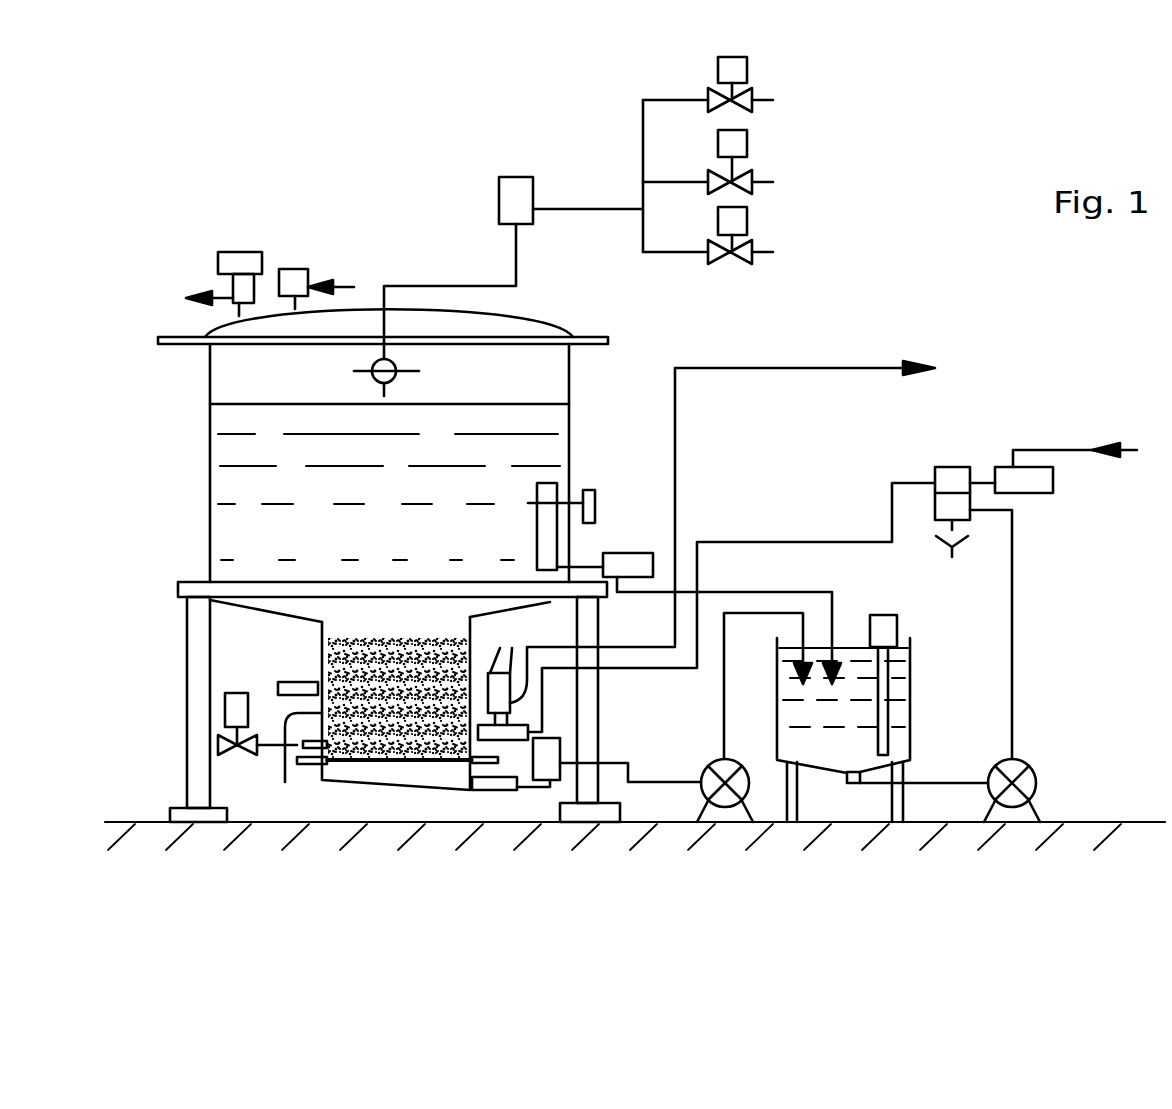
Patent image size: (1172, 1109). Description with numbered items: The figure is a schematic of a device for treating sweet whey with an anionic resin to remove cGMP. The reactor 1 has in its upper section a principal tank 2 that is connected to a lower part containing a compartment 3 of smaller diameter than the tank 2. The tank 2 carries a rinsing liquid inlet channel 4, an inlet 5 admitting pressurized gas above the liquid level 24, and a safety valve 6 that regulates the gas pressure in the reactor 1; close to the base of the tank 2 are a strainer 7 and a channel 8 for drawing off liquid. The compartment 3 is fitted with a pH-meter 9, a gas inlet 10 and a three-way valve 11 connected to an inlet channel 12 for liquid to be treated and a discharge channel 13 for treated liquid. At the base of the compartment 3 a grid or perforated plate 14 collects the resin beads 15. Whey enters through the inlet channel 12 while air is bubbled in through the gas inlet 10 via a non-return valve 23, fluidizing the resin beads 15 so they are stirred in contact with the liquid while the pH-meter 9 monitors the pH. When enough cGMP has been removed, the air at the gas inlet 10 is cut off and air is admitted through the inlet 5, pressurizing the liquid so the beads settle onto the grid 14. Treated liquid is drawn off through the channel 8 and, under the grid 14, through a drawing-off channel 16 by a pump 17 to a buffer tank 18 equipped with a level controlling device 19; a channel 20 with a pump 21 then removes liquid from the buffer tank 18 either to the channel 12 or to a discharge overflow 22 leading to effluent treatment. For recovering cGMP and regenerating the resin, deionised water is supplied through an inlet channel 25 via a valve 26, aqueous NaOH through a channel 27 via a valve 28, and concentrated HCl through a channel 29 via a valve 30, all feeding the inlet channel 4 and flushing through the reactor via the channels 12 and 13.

The reactor 1 is at (381, 565).
The principal tank 2 is at (570, 420).
The compartment 3 is at (320, 622).
The rinsing liquid inlet channel 4 is at (515, 270).
The inlet 5 is at (295, 269).
The safety valve 6 is at (232, 250).
The strainer 7 is at (548, 539).
The channel for drawing off liquid 8 is at (783, 590).
The pH-meter 9 is at (284, 680).
The gas inlet 10 is at (223, 707).
The three-way valve 11 is at (508, 641).
The inlet channel 12 is at (808, 542).
The discharge channel 13 is at (845, 367).
The grid or perforated plate 14 is at (400, 723).
The resin beads 15 is at (299, 767).
The drawing-off channel 16 is at (530, 790).
The pump 17 is at (706, 766).
The buffer tank 18 is at (913, 749).
The level controlling device 19 is at (898, 623).
The channel 20 is at (1013, 643).
The pump 21 is at (1036, 781).
The discharge overflow 22 is at (958, 553).
The non-return valve 23 is at (243, 757).
The liquid level 24 is at (225, 403).
The inlet channel 25 is at (640, 107).
The valve 26 is at (748, 70).
The channel 27 is at (677, 183).
The valve 28 is at (747, 162).
The channel 29 is at (688, 253).
The valve 30 is at (757, 238).